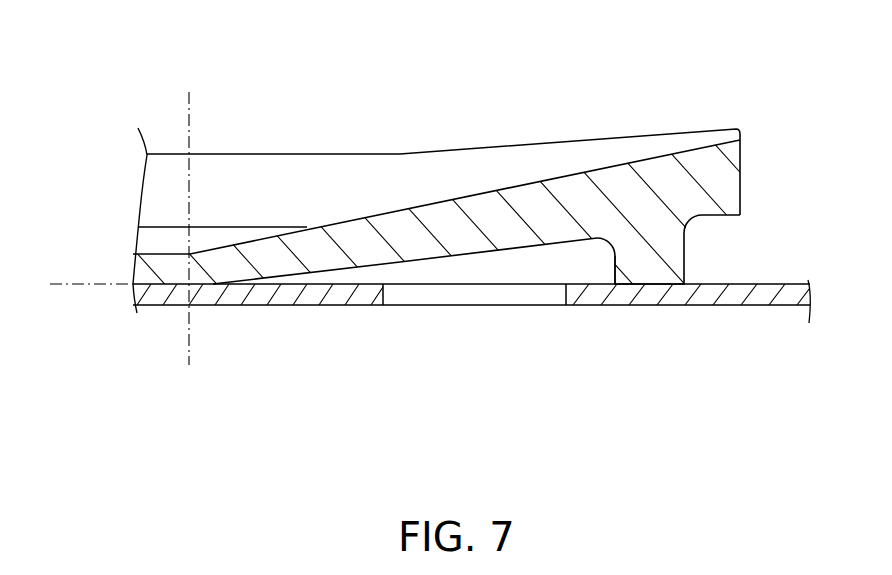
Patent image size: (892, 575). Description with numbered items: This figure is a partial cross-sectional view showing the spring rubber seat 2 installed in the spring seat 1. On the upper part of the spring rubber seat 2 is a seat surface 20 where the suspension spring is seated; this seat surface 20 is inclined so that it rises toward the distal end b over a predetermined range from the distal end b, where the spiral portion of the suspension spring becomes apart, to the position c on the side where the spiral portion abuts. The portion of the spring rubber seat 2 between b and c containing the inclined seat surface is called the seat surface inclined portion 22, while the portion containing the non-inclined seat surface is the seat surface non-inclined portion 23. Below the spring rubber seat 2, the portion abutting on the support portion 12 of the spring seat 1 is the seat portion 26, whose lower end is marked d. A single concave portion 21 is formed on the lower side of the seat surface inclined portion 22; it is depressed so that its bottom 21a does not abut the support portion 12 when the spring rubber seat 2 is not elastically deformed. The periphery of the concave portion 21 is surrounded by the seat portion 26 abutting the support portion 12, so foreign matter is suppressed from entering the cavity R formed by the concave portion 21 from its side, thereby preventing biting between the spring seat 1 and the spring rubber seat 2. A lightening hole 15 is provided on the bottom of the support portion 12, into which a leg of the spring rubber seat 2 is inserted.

The spring seat 1 is at (748, 322).
The spring rubber seat 2 is at (761, 190).
The support portion 12 is at (250, 306).
The lightening hole 15 is at (505, 305).
The seat surface 20 is at (652, 157).
The concave portion 21 is at (367, 280).
The bottom of concave portion 21a is at (436, 262).
The seat surface inclined portion 22 is at (524, 132).
The seat surface non-inclined portion 23 is at (165, 140).
The seat portion 26 is at (165, 273).
The distal end b is at (742, 158).
The end of predetermined range c is at (190, 211).
The lower end of seat portion d is at (79, 280).
The cavity R is at (583, 263).